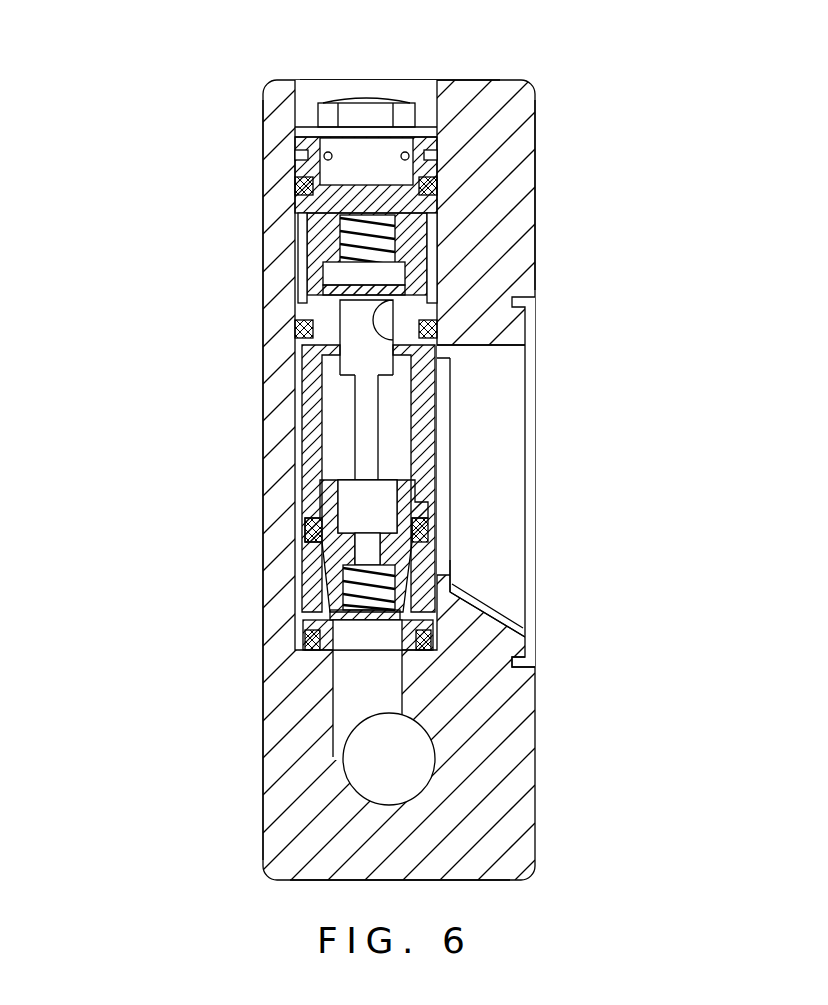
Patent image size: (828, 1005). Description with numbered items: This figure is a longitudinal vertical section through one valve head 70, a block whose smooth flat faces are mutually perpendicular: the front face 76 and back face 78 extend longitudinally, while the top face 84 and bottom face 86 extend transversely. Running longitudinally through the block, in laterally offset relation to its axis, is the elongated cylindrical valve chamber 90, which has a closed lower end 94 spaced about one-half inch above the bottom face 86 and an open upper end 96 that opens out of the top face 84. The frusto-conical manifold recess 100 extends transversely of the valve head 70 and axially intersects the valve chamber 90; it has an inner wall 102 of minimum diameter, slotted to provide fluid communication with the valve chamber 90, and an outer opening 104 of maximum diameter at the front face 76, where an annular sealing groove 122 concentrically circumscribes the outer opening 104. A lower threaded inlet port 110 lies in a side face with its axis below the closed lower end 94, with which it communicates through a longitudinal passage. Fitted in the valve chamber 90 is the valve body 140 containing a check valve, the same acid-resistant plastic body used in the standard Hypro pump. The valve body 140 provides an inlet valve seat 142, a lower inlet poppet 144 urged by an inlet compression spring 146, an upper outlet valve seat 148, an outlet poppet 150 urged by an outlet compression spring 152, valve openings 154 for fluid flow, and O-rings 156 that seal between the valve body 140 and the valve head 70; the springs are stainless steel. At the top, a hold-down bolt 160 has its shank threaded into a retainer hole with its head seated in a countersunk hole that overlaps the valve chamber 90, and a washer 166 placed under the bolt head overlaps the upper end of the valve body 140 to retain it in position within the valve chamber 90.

The valve head 70 is at (268, 82).
The front face 76 is at (535, 152).
The back face 78 is at (263, 282).
The top face 84 is at (490, 80).
The bottom face 86 is at (480, 880).
The valve chamber 90 is at (305, 403).
The closed lower end 94 is at (338, 700).
The open upper end 96 is at (433, 100).
The manifold recess 100 is at (505, 448).
The inner wall 102 is at (480, 577).
The outer opening 104 is at (520, 630).
The inlet port 110 is at (358, 793).
The annular sealing groove 122 is at (525, 302).
The valve body 140 is at (320, 488).
The inlet valve seat 142 is at (480, 696).
The lower inlet poppet 144 is at (335, 665).
The inlet compression spring 146 is at (345, 585).
The upper outlet valve seat 148 is at (500, 345).
The outlet poppet 150 is at (300, 316).
The outlet compression spring 152 is at (300, 232).
The valve openings 154 is at (365, 443).
The O-rings 156 is at (305, 185).
The hold-down bolt 160 is at (378, 100).
The washer 166 is at (310, 128).